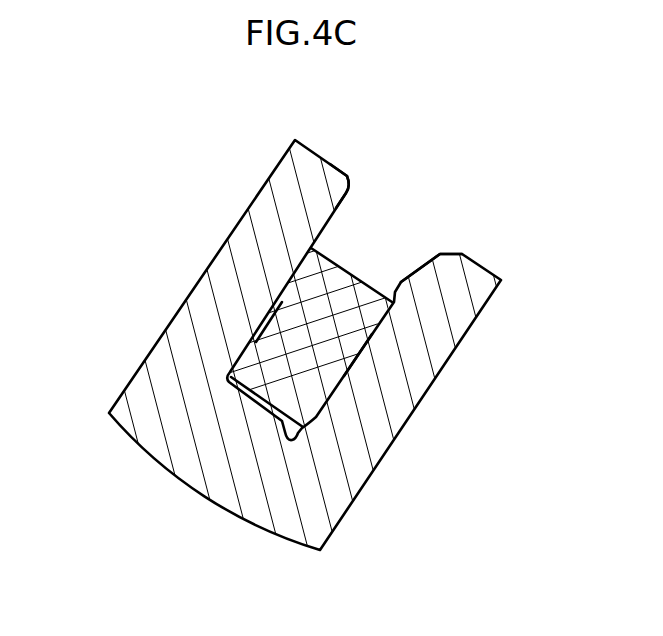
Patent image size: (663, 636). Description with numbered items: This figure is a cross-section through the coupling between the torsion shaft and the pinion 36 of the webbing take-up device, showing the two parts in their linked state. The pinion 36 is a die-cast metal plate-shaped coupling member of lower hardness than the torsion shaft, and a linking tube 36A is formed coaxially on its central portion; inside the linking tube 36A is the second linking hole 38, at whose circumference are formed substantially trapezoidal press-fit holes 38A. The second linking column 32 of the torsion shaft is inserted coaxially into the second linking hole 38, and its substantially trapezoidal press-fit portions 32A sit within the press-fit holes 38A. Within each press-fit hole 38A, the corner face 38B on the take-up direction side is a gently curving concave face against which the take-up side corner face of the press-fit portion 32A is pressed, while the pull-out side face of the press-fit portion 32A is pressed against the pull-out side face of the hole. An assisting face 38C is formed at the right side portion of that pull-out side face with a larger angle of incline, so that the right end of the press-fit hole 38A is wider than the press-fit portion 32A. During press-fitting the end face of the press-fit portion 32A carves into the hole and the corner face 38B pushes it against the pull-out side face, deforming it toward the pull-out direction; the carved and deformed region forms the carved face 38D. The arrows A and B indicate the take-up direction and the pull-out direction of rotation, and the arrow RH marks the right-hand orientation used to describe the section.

The pinion 36 is at (298, 345).
The linking tube 36A is at (264, 187).
The second linking hole 38 is at (270, 159).
The press-fit hole 38A is at (349, 195).
The corner face 38B is at (263, 314).
The assisting face 38C is at (422, 265).
The carved face 38D is at (364, 359).
The second linking column 32 is at (333, 318).
The press-fit portion 32A is at (357, 278).
The direction RH is at (158, 282).
The take-up direction A is at (362, 130).
The pull-out direction B is at (482, 208).